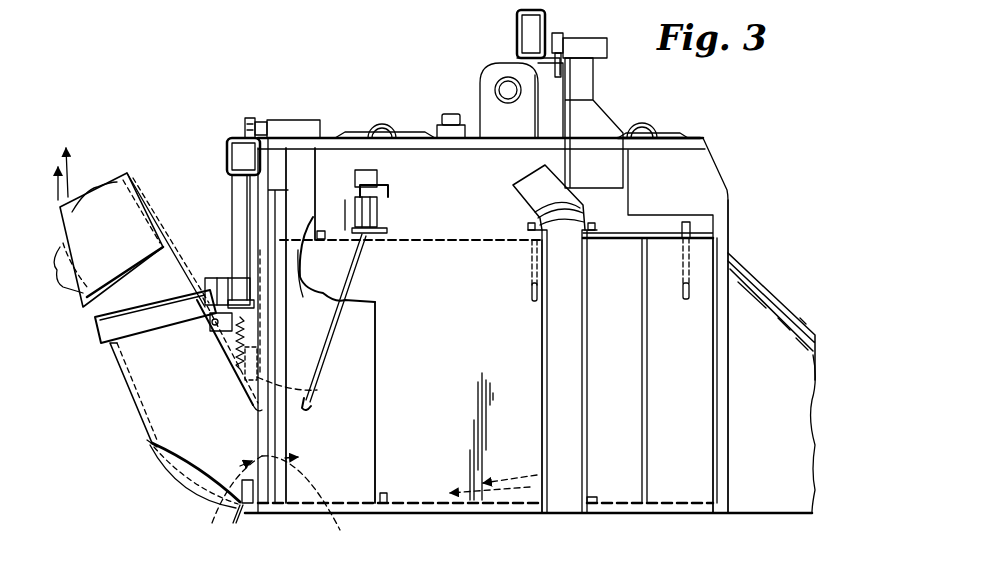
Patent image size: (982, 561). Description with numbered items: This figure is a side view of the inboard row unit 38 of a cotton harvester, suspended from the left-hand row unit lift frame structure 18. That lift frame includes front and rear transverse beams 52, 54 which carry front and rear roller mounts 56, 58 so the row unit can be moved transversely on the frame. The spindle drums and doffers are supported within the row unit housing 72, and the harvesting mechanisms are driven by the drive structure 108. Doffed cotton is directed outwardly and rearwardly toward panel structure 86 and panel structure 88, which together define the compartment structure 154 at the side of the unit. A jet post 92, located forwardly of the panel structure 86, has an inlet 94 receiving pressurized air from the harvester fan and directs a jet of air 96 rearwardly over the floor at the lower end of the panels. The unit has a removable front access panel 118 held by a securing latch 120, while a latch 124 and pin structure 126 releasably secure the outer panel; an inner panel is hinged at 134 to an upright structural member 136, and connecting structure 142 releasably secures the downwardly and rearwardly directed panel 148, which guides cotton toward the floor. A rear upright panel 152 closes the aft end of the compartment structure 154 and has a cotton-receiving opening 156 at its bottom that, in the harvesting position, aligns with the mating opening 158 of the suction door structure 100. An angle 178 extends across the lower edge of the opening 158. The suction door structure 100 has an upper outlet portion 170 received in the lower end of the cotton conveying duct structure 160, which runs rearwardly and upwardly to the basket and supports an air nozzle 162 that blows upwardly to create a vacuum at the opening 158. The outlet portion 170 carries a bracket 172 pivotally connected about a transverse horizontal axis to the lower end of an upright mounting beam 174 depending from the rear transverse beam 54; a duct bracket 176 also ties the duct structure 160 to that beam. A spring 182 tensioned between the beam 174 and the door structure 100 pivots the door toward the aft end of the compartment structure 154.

The left-hand row unit lift frame structure 18 is at (210, 127).
The row unit 38 is at (723, 123).
The front transverse beam 52 is at (515, 27).
The rear transverse beam 54 is at (227, 157).
The front roller mount 56 is at (560, 33).
The rear roller mount 58 is at (248, 120).
The row unit housing 72 is at (682, 137).
The panel structure 86 is at (480, 262).
The panel structure 88 is at (357, 347).
The jet post 92 is at (570, 317).
The inlet 94 is at (515, 177).
The jet of air 96 is at (517, 477).
The suction door structure 100 is at (183, 500).
The drive structure 108 is at (472, 77).
The front access panel 118 is at (695, 390).
The securing latch 120 is at (695, 297).
The latch 124 is at (532, 287).
The pin structure 126 is at (380, 230).
The hinge 134 is at (334, 269).
The upright structural member 136 is at (305, 165).
The connecting structure 142 is at (345, 205).
The panel 148 is at (357, 267).
The rear upright panel 152 is at (312, 407).
The compartment structure 154 is at (507, 365).
The cotton-receiving opening 156 is at (327, 517).
The opening 158 is at (212, 522).
The cotton conveying duct structure 160 is at (87, 325).
The air nozzle 162 is at (73, 210).
The upper outlet portion 170 is at (152, 352).
The bracket 172 is at (208, 290).
The upright mounting beam 174 is at (232, 197).
The duct bracket 176 is at (170, 258).
The angle 178 is at (252, 517).
The spring 182 is at (222, 343).